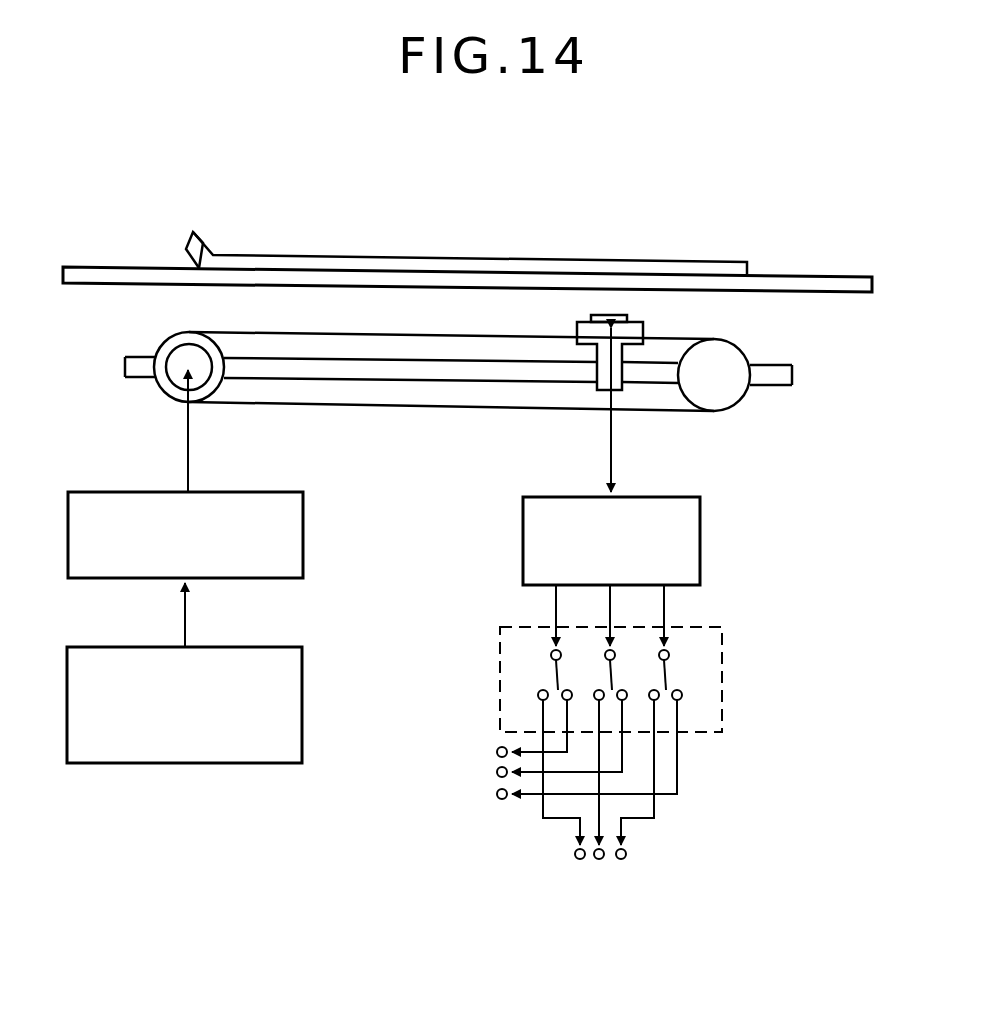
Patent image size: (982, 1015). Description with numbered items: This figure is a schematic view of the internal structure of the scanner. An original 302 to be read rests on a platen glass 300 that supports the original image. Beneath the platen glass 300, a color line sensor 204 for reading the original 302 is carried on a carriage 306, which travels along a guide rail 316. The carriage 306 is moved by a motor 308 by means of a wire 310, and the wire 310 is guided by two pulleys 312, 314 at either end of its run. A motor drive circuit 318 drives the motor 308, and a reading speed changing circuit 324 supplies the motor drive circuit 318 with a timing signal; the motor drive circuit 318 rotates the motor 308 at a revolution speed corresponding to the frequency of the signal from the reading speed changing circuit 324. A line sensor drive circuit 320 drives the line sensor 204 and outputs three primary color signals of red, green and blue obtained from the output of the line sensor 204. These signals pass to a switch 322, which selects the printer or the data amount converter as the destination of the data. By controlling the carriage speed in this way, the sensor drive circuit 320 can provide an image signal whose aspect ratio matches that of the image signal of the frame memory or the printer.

The platen glass 300 is at (800, 277).
The original 302 is at (458, 258).
The color line sensor 204 is at (635, 313).
The carriage 306 is at (603, 390).
The motor 308 is at (178, 358).
The wire 310 is at (463, 409).
The pulley 312 is at (170, 387).
The pulley 314 is at (737, 403).
The guide rail 316 is at (793, 375).
The motor drive circuit 318 is at (303, 545).
The line sensor drive circuit 320 is at (700, 550).
The switch 322 is at (722, 688).
The reading speed changing circuit 324 is at (302, 697).